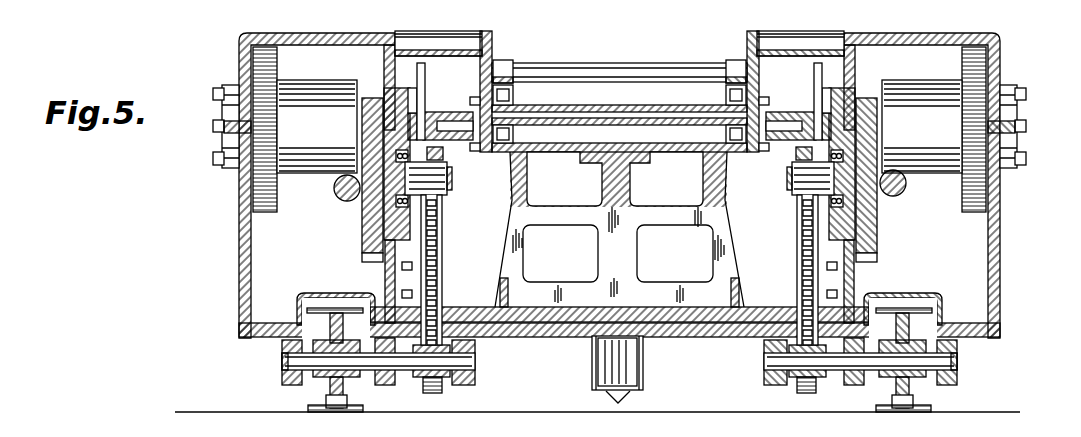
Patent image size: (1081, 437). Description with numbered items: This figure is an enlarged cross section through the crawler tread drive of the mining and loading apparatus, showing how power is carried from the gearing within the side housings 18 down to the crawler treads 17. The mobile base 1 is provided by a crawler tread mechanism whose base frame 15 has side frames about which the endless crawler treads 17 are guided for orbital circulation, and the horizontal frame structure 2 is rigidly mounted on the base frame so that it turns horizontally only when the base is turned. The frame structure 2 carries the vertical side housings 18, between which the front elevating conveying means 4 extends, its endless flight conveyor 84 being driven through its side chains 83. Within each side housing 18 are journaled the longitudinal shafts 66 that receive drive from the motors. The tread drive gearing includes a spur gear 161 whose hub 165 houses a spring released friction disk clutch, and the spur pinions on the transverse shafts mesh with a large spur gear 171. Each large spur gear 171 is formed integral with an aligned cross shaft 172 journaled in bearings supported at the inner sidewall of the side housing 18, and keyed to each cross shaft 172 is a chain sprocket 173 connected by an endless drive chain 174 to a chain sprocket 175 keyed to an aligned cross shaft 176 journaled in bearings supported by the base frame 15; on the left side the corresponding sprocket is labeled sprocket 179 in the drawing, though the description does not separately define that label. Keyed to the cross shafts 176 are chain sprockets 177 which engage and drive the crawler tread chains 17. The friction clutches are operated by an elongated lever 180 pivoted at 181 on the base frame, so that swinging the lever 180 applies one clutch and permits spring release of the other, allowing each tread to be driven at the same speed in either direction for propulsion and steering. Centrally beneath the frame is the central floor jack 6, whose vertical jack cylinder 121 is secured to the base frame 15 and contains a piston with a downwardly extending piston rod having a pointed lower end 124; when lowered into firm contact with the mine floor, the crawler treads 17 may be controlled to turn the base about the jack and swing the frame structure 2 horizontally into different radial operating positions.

The mobile base 1 is at (973, 343).
The frame structure 2 is at (712, 290).
The front elevating conveying means 4 is at (700, 58).
The central floor jack 6 is at (600, 359).
The base frame 15 is at (743, 333).
The crawler treads 17 is at (345, 415).
The side housings 18 is at (240, 240).
The longitudinal shafts 66 is at (337, 193).
The side chains 83 is at (513, 97).
The endless flight conveyor 84 is at (622, 67).
The jack cylinder 121 is at (630, 373).
The pointed lower end 124 is at (623, 400).
The spur gear 161 is at (238, 190).
The hubs 165 is at (320, 80).
The large spur gear 171 is at (363, 242).
The cross shafts 172 is at (441, 197).
The chain sprockets 173 is at (787, 170).
The endless drive chains 174 is at (442, 283).
The chain sprockets 175 is at (433, 395).
The cross shafts 176 is at (400, 362).
The chain sprockets 177 is at (330, 388).
The pinion 179 is at (438, 164).
The elongated lever 180 is at (424, 112).
The pivot 181 is at (421, 108).